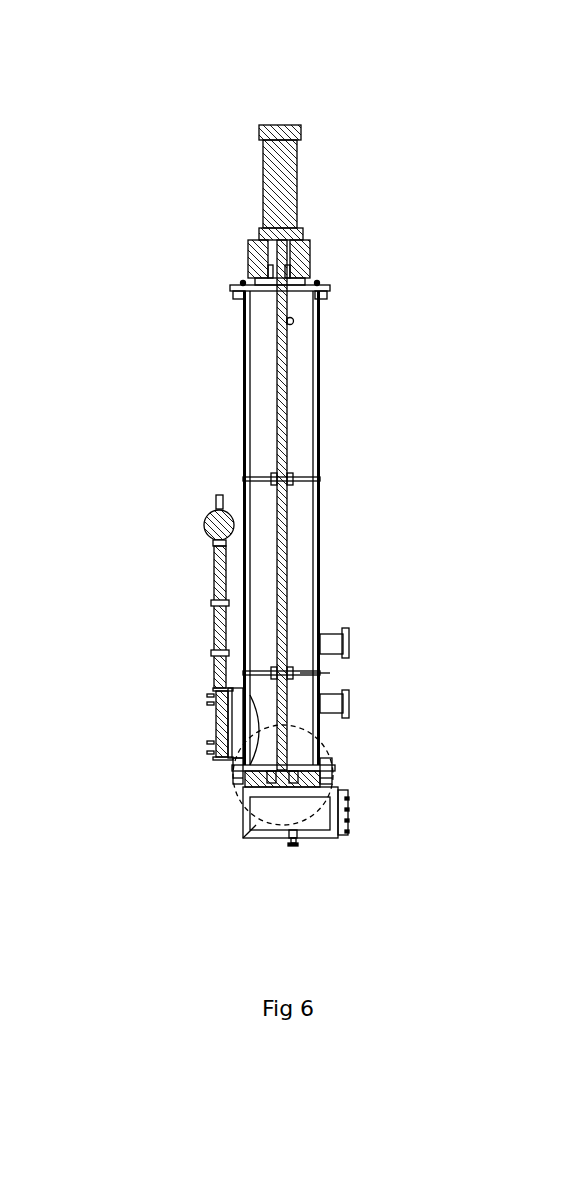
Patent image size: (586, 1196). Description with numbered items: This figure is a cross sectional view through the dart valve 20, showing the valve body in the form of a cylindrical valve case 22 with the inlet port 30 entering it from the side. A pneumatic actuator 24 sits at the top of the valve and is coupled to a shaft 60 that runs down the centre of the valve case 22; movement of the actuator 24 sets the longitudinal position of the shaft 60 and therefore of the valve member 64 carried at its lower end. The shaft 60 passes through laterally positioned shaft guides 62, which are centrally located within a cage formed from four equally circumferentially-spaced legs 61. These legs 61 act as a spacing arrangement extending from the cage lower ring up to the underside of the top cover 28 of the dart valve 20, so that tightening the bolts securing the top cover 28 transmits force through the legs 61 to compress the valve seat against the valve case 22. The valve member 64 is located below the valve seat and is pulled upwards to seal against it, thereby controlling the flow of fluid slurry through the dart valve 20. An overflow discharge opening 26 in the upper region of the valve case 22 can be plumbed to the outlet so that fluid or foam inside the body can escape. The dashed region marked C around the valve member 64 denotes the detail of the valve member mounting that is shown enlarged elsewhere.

The dart valve 20 is at (282, 457).
The valve case 22 is at (243, 348).
The pneumatic actuator 24 is at (263, 167).
The overflow discharge opening 26 is at (293, 320).
The top cover 28 is at (327, 281).
The inlet port 30 is at (213, 716).
The shaft 60 is at (285, 370).
The legs 61 is at (252, 430).
The shaft guides 62 is at (296, 672).
The valve member 64 is at (308, 763).
The region C is at (237, 802).